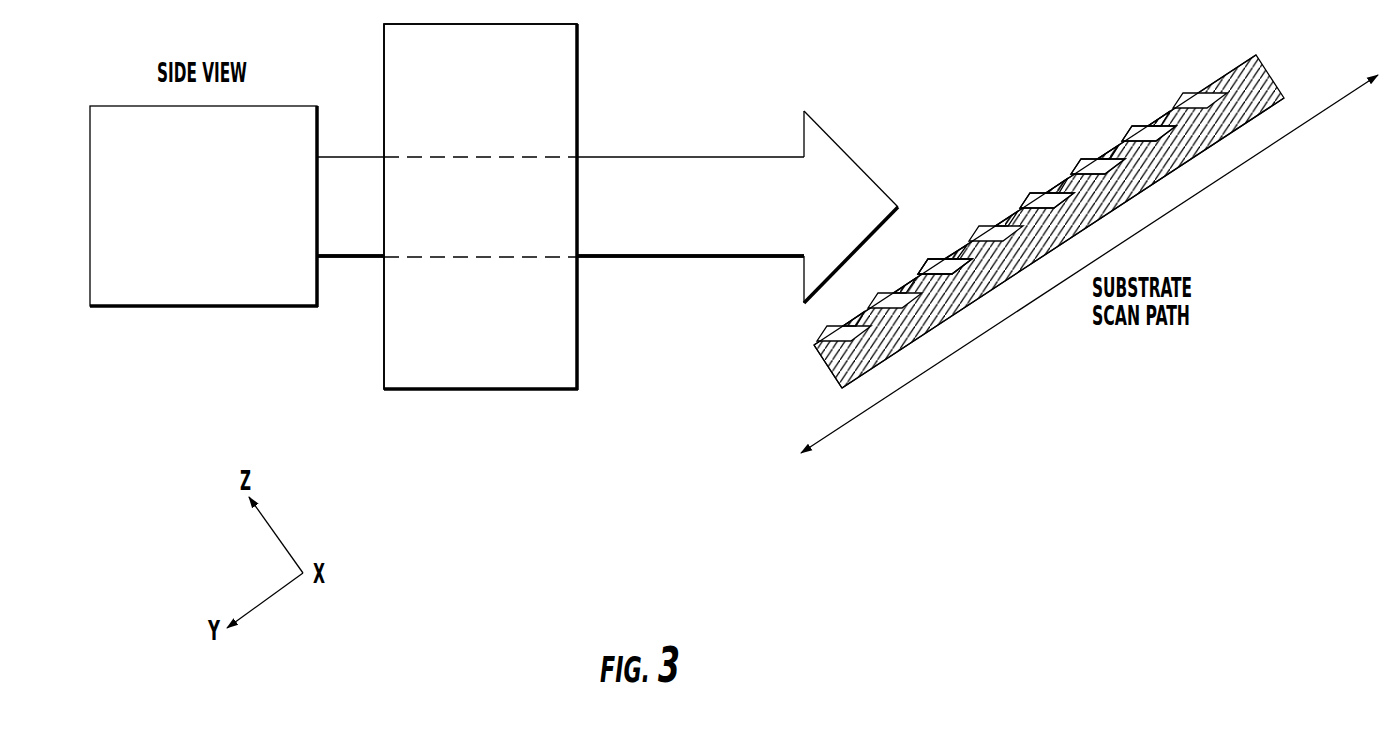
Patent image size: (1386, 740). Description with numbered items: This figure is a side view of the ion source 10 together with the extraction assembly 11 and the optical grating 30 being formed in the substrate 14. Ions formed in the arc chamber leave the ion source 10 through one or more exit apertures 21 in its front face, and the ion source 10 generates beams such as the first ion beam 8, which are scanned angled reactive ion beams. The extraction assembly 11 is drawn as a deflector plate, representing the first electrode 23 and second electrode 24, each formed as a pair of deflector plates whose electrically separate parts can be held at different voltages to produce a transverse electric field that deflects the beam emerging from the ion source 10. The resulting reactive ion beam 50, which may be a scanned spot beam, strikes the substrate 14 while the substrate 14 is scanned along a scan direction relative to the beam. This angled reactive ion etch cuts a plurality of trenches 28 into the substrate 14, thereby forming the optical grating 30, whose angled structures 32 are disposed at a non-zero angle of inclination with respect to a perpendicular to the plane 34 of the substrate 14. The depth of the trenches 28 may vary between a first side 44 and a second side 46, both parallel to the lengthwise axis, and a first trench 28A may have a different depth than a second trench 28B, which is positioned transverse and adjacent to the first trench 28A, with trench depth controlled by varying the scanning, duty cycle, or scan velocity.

The ion source 10 is at (241, 296).
The first ion beam 8 is at (356, 245).
The exit aperture 21 is at (319, 190).
The reactive ion beam 50 is at (665, 182).
The extraction assembly 11 is at (488, 422).
The first electrode 23 is at (389, 397).
The second electrode 24 is at (480, 206).
The substrate 14 is at (1231, 62).
The angled structures 32 is at (1177, 107).
The plane of the substrate 34 is at (990, 292).
The optical grating 30 is at (823, 367).
The trenches 28 is at (1049, 190).
The first trench 28A is at (1097, 158).
The second trench 28B is at (1142, 122).
The first side 44 is at (927, 273).
The second side 46 is at (940, 258).